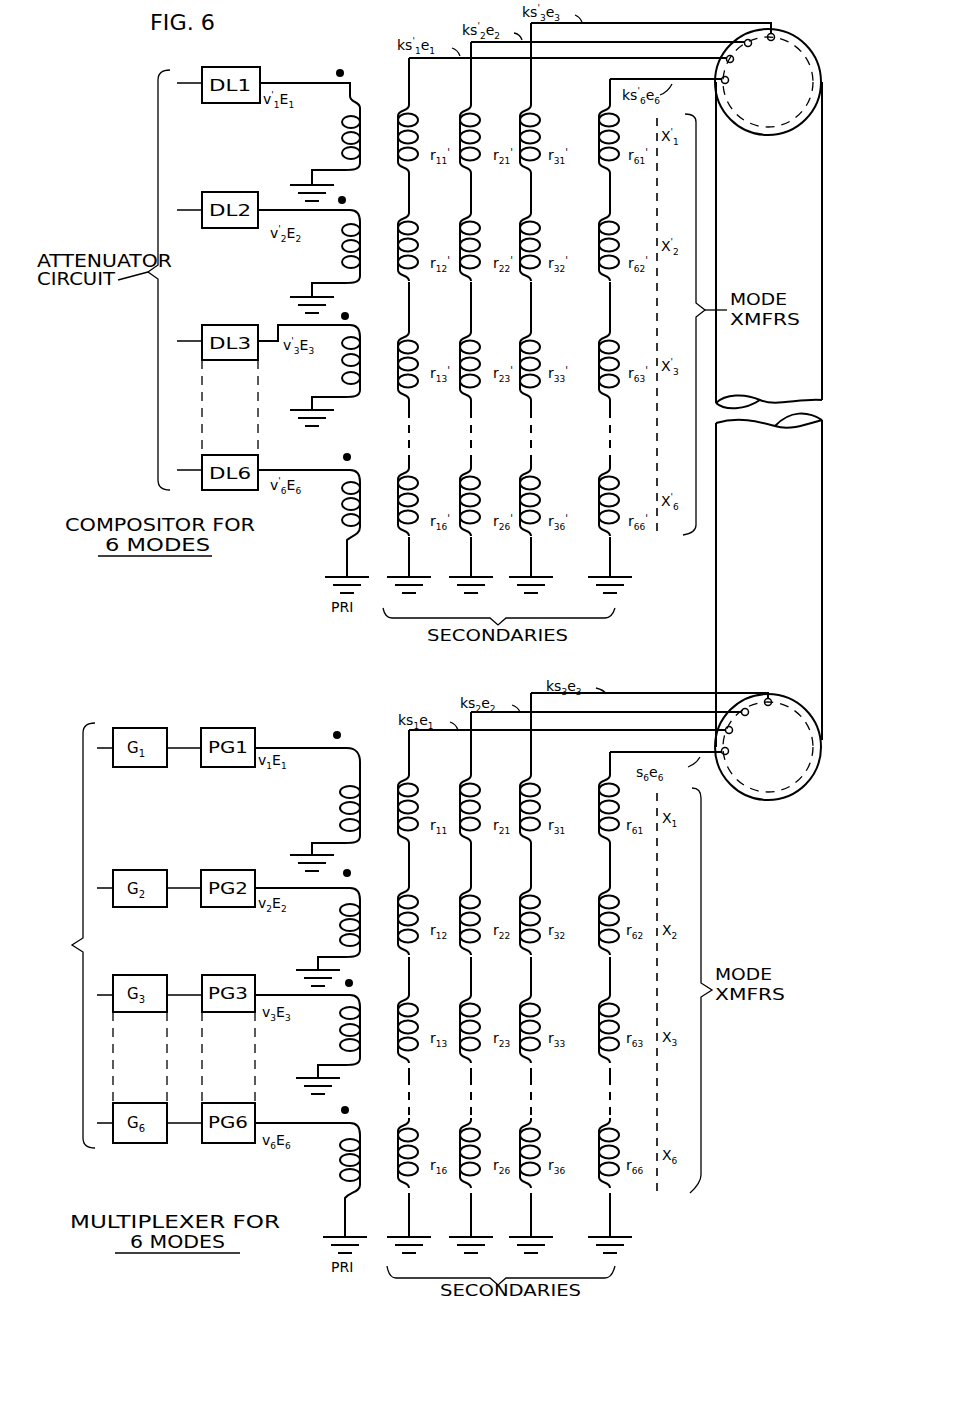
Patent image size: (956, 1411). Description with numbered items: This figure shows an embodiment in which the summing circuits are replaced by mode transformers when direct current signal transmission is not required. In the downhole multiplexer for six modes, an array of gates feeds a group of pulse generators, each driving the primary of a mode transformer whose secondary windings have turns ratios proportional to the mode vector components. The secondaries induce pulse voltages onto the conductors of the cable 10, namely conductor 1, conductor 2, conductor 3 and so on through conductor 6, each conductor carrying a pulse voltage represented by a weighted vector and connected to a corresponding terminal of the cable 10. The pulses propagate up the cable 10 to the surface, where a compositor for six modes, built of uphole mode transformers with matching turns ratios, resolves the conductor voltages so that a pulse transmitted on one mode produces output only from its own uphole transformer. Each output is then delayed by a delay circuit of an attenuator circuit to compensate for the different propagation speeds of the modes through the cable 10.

The cable 10 is at (807, 558).
The conductor 1 is at (565, 665).
The conductor 2 is at (604, 657).
The conductor 3 is at (646, 648).
The conductor 6 is at (664, 674).